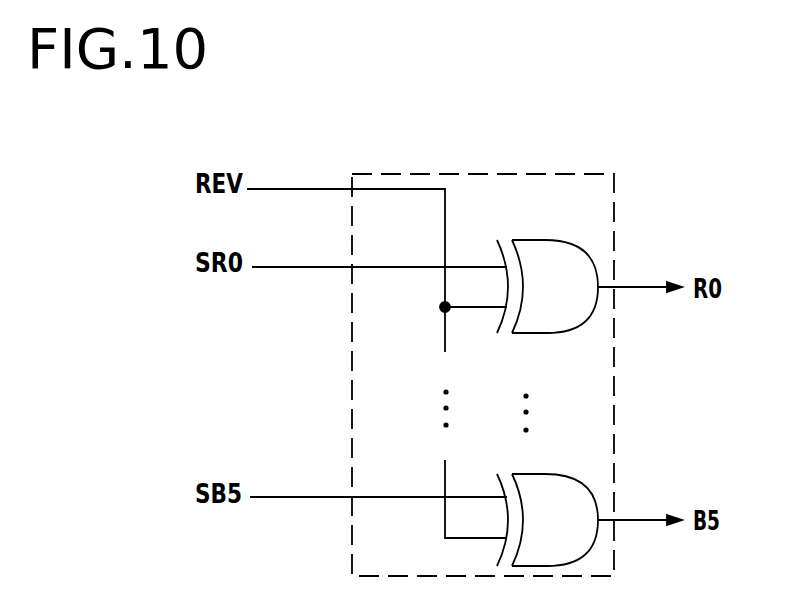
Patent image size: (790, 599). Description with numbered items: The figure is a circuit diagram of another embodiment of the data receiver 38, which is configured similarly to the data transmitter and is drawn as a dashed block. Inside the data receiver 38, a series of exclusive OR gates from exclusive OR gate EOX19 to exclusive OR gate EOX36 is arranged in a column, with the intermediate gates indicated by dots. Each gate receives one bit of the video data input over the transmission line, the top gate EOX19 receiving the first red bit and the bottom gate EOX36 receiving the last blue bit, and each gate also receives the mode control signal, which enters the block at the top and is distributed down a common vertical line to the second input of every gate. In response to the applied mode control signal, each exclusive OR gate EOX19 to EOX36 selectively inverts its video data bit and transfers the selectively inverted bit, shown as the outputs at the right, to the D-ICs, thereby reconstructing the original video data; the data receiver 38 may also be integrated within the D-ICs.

The data receiver 38 is at (497, 133).
The exclusive OR gate EOX19 is at (570, 250).
The exclusive OR gate EOX36 is at (560, 477).